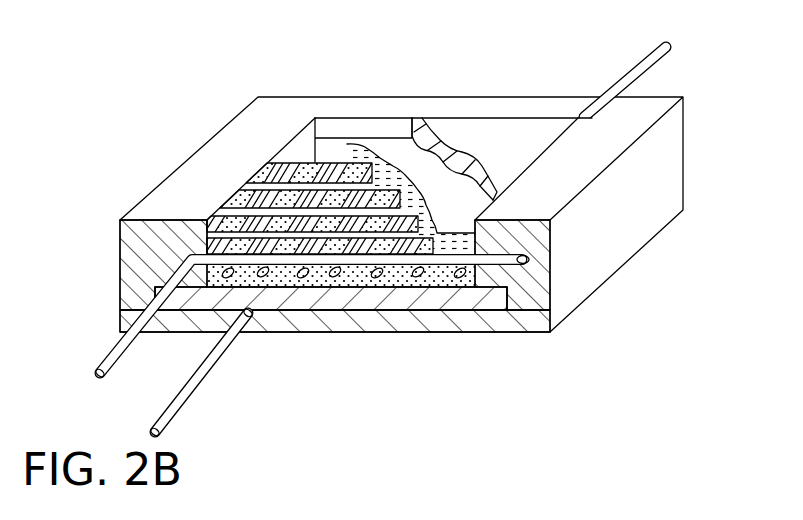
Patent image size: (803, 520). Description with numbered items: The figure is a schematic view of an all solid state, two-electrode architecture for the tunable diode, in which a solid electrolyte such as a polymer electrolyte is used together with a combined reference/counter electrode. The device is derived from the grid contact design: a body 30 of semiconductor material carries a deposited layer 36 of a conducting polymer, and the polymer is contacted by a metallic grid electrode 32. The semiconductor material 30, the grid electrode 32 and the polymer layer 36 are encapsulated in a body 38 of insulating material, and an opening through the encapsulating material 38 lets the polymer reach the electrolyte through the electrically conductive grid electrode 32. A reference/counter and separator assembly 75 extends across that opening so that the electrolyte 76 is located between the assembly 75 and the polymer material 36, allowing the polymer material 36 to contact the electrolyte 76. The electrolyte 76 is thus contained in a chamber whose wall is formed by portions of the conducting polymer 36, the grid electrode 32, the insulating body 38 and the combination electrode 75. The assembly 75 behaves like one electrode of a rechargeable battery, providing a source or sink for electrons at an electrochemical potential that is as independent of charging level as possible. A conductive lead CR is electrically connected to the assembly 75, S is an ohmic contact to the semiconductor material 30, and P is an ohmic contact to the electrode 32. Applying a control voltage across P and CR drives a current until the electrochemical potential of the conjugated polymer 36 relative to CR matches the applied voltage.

The body of semiconductor material 30 is at (347, 297).
The metallic grid electrode 32 is at (315, 196).
The layer of conducting polymer 36 is at (443, 276).
The body of insulating material 38 is at (623, 240).
The reference/counter and separator assembly 75 is at (502, 133).
The electrolyte 76 is at (366, 162).
The conductive lead CR is at (664, 66).
The ohmic contact to the electrode P is at (103, 353).
The ohmic contact to the semiconductor material S is at (164, 411).